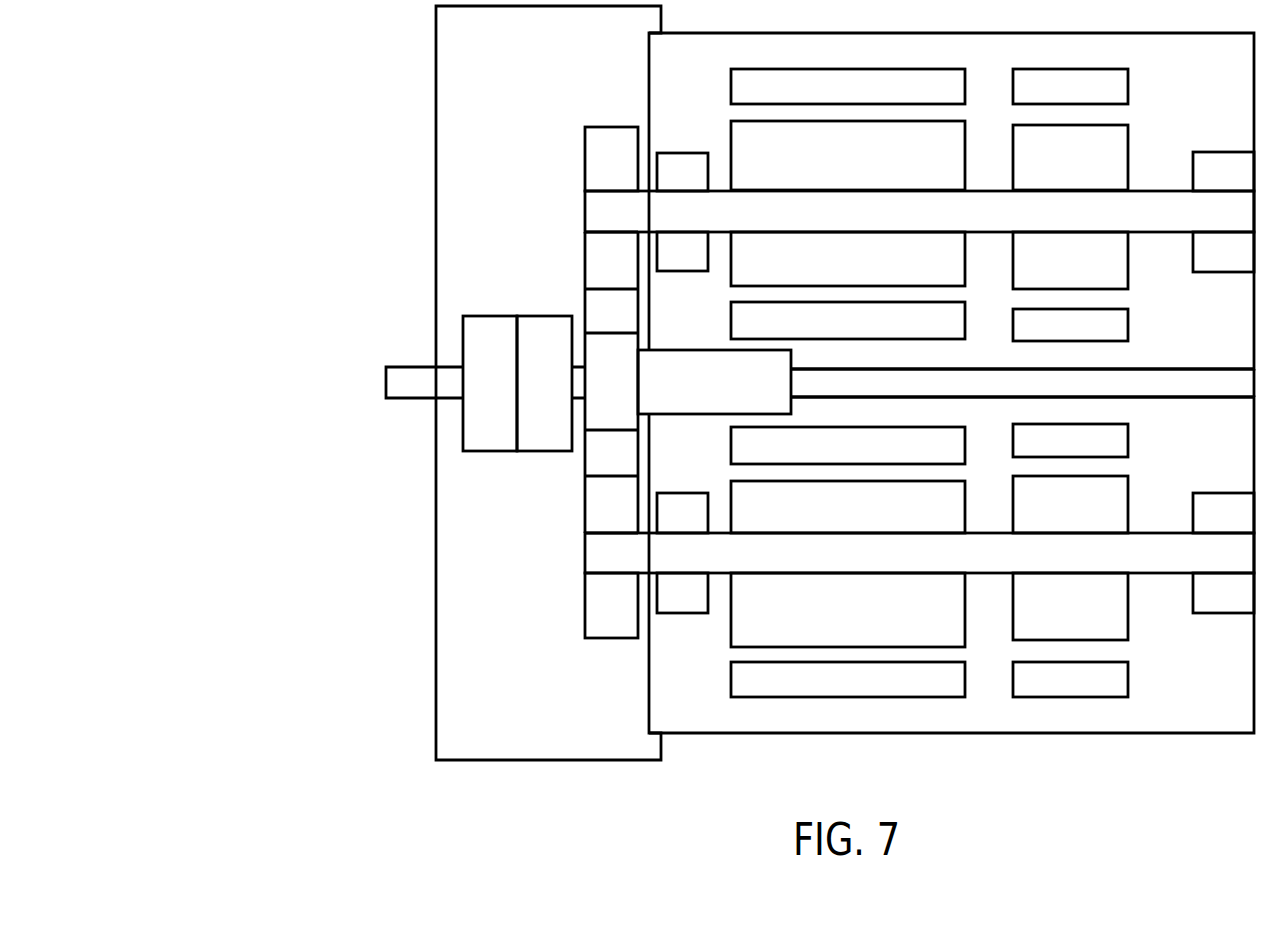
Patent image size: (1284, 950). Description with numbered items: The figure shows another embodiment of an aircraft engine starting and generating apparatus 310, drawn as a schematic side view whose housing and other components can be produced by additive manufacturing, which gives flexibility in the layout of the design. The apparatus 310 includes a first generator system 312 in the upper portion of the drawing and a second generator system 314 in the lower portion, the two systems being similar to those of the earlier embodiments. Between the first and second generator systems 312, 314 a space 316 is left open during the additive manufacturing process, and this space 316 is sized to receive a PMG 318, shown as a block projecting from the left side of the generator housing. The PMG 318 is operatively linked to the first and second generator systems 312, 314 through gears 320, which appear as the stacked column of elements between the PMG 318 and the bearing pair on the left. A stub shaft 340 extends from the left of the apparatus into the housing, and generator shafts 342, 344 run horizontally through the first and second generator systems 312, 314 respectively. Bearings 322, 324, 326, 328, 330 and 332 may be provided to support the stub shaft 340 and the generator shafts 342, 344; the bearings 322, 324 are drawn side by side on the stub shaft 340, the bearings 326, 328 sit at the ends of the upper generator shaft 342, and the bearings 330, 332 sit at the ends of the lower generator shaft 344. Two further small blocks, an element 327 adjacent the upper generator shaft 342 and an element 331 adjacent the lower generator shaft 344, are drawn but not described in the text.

The engine starting and generating apparatus 310 is at (366, 93).
The first generator system 312 is at (680, 84).
The second generator system 314 is at (682, 663).
The space 316 is at (1197, 383).
The PMG 318 is at (678, 401).
The gears 320 is at (570, 470).
The bearing 322 is at (487, 326).
The bearing 324 is at (543, 326).
The bearing 326 is at (598, 161).
The upper spacer 327 is at (677, 265).
The bearing 328 is at (1224, 170).
The bearing 330 is at (598, 604).
The lower spacer 331 is at (677, 597).
The bearing 332 is at (1224, 506).
The stub shaft 340 is at (394, 383).
The generator shaft 342 is at (861, 199).
The generator shaft 344 is at (866, 558).